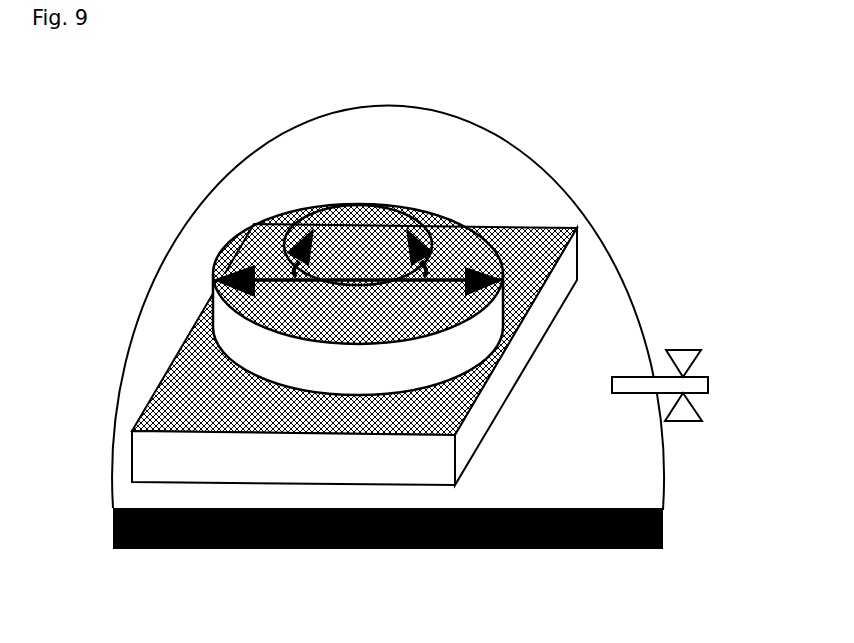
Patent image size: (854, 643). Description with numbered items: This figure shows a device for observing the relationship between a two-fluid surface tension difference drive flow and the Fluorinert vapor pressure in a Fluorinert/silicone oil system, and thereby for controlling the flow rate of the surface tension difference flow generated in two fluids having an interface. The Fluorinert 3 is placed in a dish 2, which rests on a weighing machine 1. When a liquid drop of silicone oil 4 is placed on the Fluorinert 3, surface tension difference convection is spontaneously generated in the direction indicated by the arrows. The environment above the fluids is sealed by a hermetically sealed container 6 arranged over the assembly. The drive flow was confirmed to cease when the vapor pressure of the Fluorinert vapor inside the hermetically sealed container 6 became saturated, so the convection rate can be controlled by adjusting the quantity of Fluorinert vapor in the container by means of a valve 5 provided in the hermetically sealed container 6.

The weighing machine 1 is at (203, 457).
The dish 2 is at (228, 325).
The Fluorinert 3 is at (265, 238).
The liquid drop of silicone oil 4 is at (360, 240).
The valve 5 is at (681, 350).
The hermetically sealed container 6 is at (518, 170).